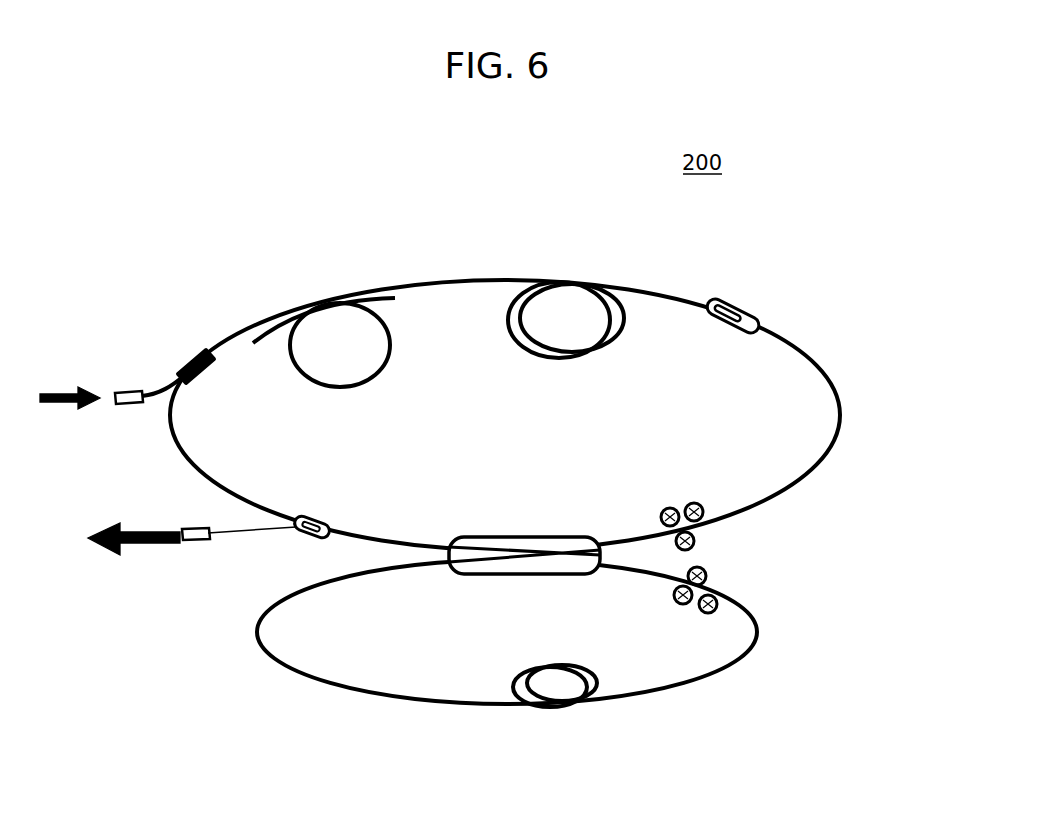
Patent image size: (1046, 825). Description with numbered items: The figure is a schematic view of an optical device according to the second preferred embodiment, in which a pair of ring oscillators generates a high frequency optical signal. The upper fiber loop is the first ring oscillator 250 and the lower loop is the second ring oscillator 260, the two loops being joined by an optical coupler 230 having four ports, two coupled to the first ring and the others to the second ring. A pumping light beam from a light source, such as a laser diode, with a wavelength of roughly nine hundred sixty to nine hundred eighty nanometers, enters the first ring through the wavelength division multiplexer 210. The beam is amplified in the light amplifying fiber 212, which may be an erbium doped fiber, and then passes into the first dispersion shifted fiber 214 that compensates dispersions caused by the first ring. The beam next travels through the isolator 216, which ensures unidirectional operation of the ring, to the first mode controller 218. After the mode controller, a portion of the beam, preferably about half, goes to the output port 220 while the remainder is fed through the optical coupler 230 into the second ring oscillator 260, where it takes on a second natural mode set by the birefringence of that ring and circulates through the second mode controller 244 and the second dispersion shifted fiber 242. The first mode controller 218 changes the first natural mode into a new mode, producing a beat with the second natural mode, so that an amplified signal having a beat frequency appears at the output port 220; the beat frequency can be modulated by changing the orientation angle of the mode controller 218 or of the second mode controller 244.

The wavelength division multiplexer 210 is at (193, 352).
The light amplifying fiber 212 is at (366, 292).
The first dispersion shifted fiber 214 is at (517, 298).
The isolator 216 is at (736, 305).
The first mode controller 218 is at (697, 503).
The output port 220 is at (323, 515).
The optical coupler 230 is at (552, 576).
The second dispersion shifted fiber 242 is at (515, 703).
The second mode controller 244 is at (710, 578).
The first ring oscillator 250 is at (884, 374).
The second ring oscillator 260 is at (820, 603).